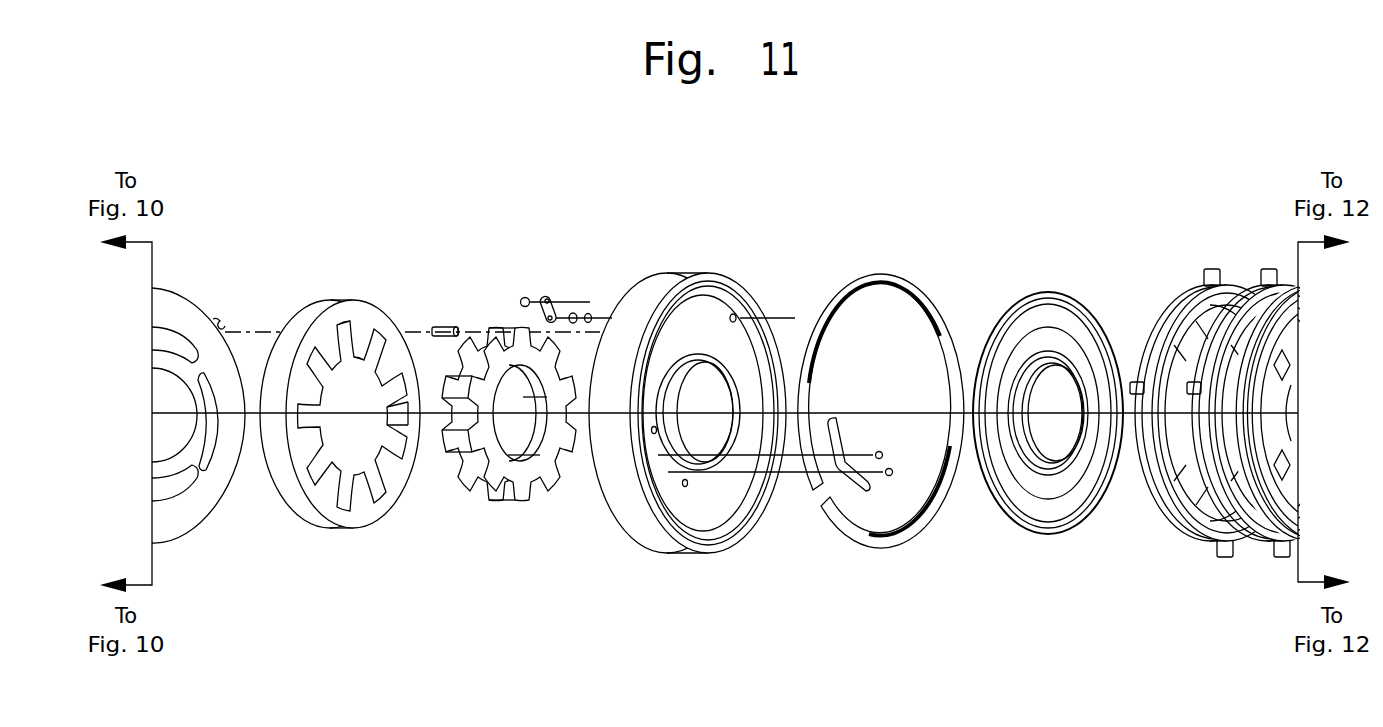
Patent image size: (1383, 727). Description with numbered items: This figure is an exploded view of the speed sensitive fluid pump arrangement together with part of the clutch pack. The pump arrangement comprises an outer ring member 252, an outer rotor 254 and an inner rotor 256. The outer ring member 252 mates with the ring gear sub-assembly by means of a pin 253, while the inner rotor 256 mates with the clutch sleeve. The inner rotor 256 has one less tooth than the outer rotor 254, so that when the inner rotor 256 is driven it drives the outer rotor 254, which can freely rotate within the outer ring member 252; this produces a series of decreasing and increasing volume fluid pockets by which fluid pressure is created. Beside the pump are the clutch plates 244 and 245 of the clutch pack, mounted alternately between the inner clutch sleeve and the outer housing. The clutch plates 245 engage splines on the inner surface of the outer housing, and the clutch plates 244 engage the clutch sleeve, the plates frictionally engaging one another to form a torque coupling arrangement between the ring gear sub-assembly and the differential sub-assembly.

The outer ring member 252 is at (700, 326).
The pin 253 is at (444, 327).
The outer rotor 254 is at (338, 325).
The inner rotor 256 is at (519, 340).
The clutch plates 245 is at (1183, 308).
The clutch plates 244 is at (1233, 297).